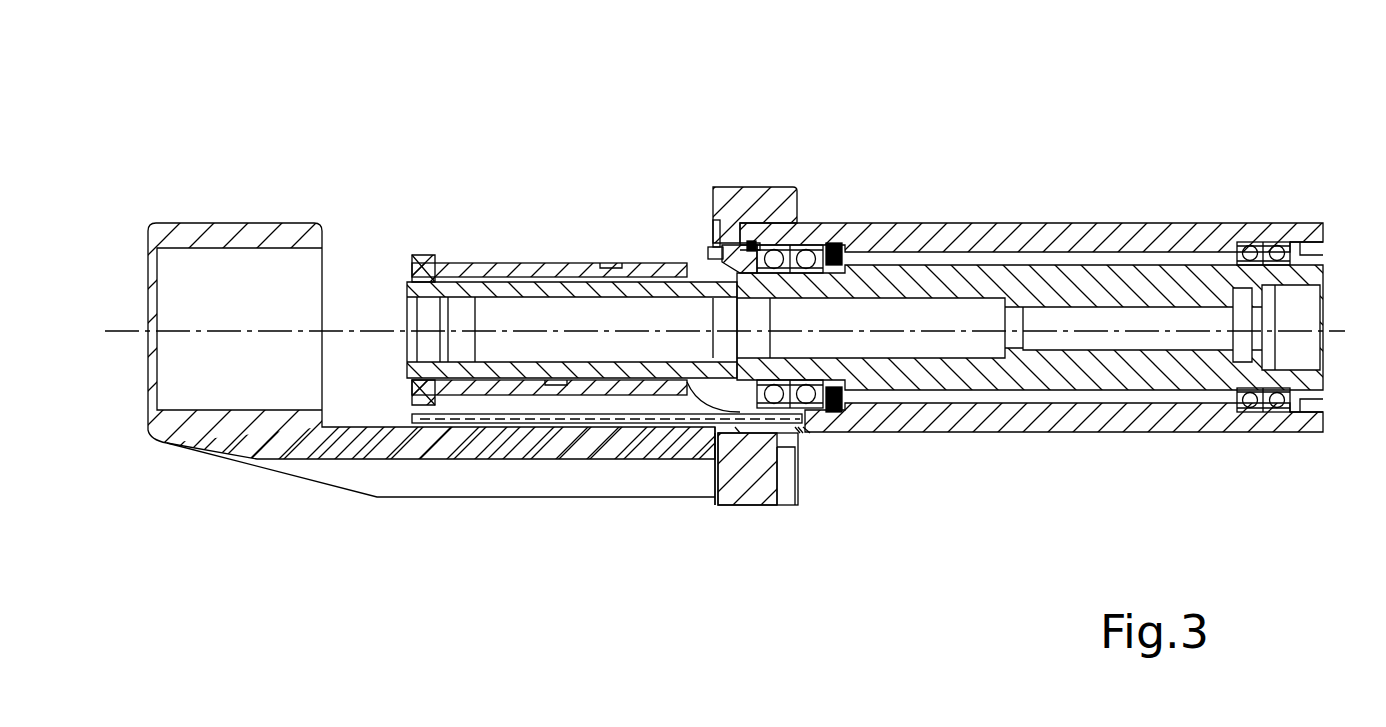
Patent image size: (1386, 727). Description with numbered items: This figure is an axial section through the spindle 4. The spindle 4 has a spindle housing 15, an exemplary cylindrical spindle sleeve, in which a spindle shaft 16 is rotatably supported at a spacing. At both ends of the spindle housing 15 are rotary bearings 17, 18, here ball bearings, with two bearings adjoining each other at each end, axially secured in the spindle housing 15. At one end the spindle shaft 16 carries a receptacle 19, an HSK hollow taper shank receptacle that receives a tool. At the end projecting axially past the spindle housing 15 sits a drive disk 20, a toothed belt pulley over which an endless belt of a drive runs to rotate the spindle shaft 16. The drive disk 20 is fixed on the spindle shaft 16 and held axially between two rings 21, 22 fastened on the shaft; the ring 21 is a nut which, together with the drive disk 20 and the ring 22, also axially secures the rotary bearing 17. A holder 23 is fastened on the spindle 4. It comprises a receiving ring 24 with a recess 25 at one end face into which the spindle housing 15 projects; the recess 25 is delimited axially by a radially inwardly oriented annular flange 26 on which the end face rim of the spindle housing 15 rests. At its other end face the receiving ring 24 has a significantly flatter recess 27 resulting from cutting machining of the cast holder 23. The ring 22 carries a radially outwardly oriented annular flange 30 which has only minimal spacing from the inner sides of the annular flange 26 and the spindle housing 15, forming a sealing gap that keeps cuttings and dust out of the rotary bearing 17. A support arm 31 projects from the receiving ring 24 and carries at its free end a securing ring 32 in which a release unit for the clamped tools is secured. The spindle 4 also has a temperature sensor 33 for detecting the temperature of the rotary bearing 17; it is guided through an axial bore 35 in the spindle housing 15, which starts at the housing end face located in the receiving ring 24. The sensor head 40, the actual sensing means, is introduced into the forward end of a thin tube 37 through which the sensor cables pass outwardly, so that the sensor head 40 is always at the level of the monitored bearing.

The spindle 4 is at (1075, 140).
The spindle housing 15 is at (1093, 240).
The spindle shaft 16 is at (908, 278).
The rotary bearing 17 is at (798, 237).
The rotary bearing 18 is at (1259, 243).
The receptacle 19 is at (1287, 308).
The drive disk 20 is at (485, 268).
The ring 21 is at (420, 258).
The ring 22 is at (695, 427).
The holder 23 is at (763, 477).
The receiving ring 24 is at (747, 207).
The recess 25 is at (757, 250).
The annular flange 26 is at (733, 235).
The recess 27 is at (718, 228).
The annular flange 30 is at (720, 447).
The support arm 31 is at (437, 447).
The securing ring 32 is at (197, 236).
The temperature sensor 33 is at (800, 433).
The axial bore 35 is at (738, 433).
The tube 37 is at (800, 433).
The sensor head 40 is at (807, 433).